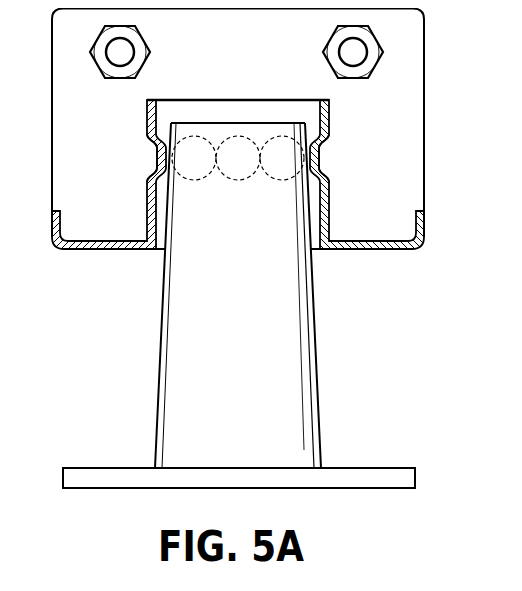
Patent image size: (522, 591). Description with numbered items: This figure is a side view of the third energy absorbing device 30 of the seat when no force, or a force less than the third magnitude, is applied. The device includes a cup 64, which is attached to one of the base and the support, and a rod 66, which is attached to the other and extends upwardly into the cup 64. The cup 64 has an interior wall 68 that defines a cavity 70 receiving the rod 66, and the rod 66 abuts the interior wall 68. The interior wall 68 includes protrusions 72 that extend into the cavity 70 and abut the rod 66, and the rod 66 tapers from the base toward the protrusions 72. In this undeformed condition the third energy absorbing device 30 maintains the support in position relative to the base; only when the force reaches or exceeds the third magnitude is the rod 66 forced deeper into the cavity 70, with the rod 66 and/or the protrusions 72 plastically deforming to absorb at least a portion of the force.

The third energy absorbing device 30 is at (363, 281).
The cup 64 is at (139, 204).
The rod 66 is at (150, 356).
The interior wall 68 is at (298, 204).
The cavity 70 is at (184, 107).
The protrusions 72 is at (146, 149).